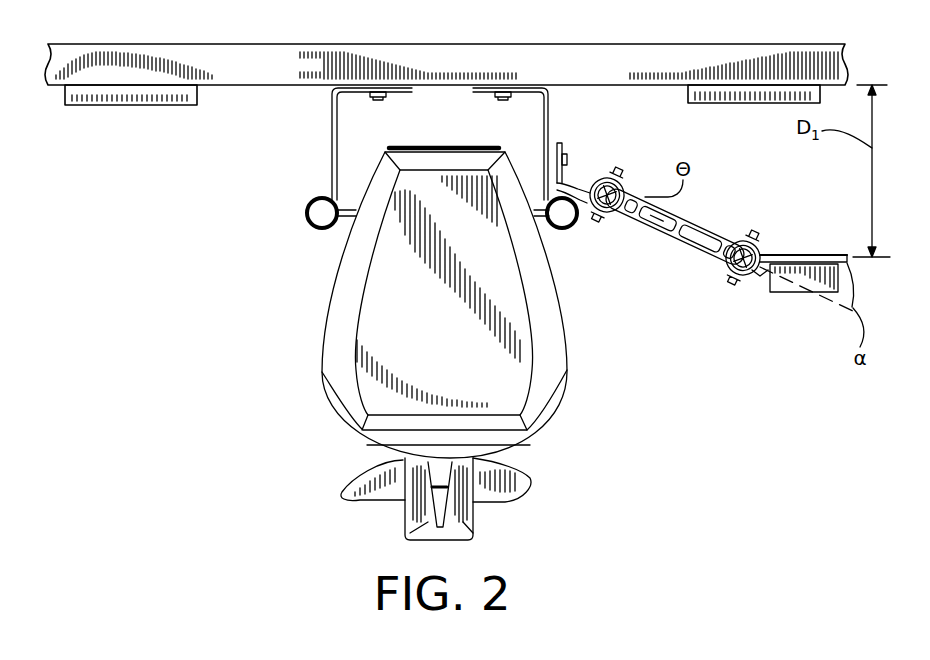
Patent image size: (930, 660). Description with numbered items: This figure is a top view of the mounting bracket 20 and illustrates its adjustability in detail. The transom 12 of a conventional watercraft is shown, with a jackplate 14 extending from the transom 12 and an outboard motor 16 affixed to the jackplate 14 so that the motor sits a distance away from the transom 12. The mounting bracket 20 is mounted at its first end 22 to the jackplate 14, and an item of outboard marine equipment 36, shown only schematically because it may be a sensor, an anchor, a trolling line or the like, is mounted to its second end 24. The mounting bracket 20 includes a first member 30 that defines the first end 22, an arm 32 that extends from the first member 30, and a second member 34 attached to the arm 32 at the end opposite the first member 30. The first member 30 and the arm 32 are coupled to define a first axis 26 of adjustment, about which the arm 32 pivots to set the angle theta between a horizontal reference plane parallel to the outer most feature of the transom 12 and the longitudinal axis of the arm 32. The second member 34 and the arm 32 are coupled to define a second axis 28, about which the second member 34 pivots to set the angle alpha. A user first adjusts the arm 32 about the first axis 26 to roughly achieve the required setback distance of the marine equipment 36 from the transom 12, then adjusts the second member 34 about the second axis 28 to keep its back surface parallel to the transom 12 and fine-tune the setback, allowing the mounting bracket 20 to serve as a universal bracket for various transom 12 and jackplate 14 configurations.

The transom 12 is at (226, 86).
The jackplate 14 is at (330, 152).
The outboard motor 16 is at (326, 300).
The mounting bracket 20 is at (718, 260).
The first end 22 is at (578, 158).
The second end 24 is at (760, 285).
The first axis 26 is at (612, 214).
The second axis 28 is at (733, 286).
The first member 30 is at (566, 230).
The arm 32 is at (660, 240).
The second member 34 is at (832, 254).
The marine equipment 36 is at (787, 296).